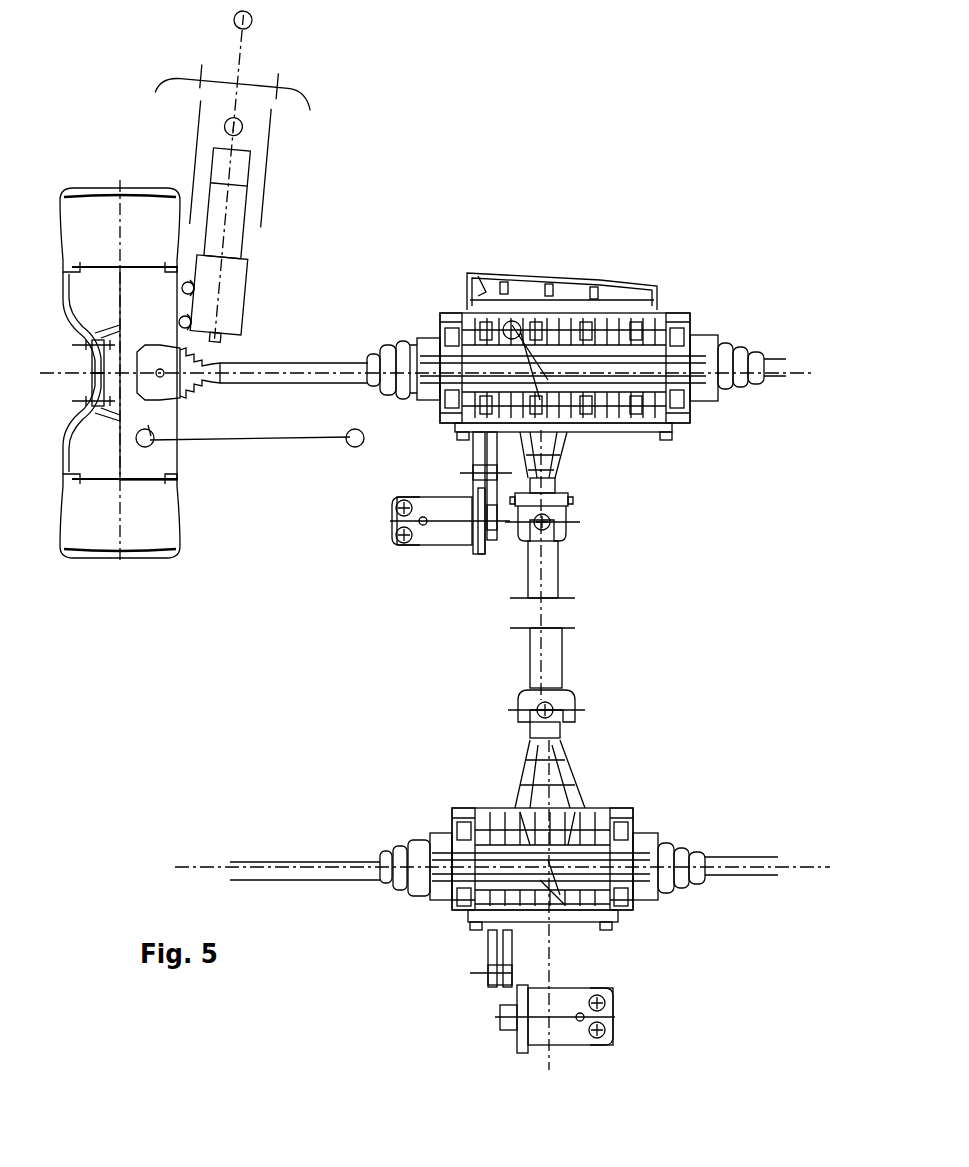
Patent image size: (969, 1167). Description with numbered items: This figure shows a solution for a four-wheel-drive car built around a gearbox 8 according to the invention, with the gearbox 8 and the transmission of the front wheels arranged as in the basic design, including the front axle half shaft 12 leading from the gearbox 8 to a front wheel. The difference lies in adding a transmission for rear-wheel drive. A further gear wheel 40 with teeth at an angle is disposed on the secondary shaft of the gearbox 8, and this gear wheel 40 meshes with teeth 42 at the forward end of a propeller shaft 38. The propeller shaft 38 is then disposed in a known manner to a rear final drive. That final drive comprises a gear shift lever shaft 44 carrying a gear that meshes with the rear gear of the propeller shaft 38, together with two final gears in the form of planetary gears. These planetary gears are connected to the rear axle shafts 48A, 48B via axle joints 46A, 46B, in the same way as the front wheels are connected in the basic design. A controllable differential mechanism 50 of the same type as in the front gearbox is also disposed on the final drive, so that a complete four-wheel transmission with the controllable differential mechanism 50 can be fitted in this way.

The gearbox 8 is at (602, 272).
The front axle half shaft 12 is at (300, 363).
The propeller shaft 38 is at (552, 572).
The further gear wheel 40 is at (472, 433).
The teeth 42 is at (575, 432).
The gear shift lever shaft 44 is at (587, 805).
The axle joint 46A is at (404, 840).
The axle joint 46B is at (658, 852).
The rear axle shaft 48A is at (305, 872).
The rear axle shaft 48B is at (750, 870).
The controllable differential mechanism 50 is at (444, 560).